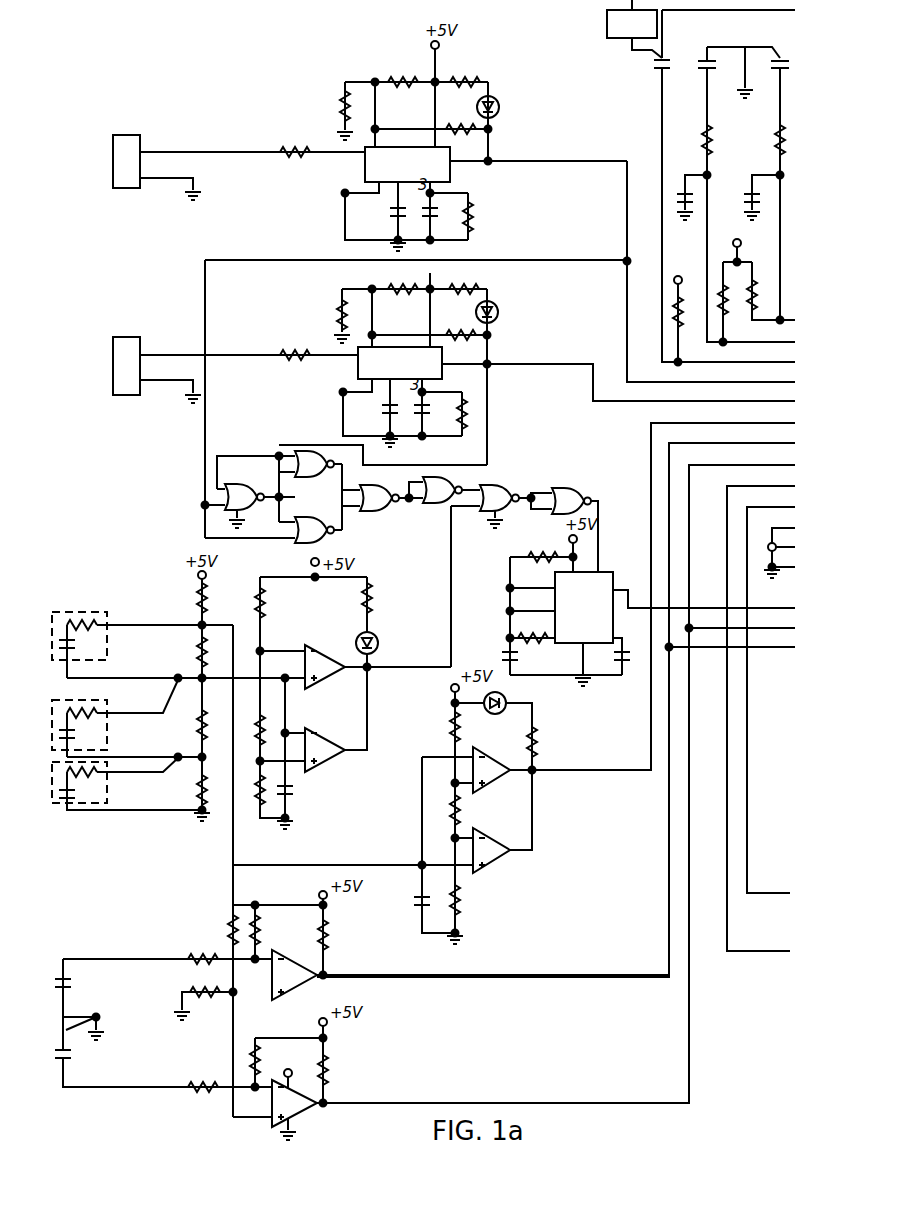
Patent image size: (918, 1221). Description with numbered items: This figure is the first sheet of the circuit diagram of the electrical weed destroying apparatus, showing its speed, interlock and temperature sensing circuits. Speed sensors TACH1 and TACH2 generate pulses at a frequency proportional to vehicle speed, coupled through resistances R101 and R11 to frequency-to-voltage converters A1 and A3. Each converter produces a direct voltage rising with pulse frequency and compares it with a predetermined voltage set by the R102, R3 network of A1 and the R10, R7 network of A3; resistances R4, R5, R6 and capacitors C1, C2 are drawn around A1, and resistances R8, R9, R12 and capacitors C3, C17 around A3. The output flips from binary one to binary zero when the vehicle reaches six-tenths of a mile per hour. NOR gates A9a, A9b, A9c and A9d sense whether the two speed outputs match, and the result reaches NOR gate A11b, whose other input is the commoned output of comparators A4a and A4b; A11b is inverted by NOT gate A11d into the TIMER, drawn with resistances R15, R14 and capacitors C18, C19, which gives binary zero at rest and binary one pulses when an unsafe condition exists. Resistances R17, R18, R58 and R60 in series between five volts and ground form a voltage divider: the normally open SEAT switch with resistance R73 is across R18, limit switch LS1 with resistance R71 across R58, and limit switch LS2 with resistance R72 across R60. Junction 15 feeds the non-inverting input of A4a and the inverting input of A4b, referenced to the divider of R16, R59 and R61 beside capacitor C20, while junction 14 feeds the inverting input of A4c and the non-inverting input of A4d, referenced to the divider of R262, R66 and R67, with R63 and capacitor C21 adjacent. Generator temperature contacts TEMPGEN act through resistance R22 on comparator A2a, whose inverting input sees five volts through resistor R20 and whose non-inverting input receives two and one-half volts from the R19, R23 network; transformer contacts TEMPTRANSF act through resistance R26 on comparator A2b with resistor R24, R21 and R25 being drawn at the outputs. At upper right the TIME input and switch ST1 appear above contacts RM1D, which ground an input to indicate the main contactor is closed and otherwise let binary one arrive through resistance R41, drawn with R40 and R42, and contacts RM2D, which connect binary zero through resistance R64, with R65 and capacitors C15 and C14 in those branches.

The tachometer speed sensor TACH1 is at (210, 167).
The tachometer speed sensor TACH2 is at (206, 370).
The resistance R101 is at (296, 162).
The resistance R102 is at (340, 108).
The resistance R3 is at (410, 64).
The resistor R4 is at (467, 64).
The resistor R5 is at (469, 112).
The resistor R6 is at (472, 214).
The frequency-to-voltage converter A1 is at (496, 163).
The capacitor C1 is at (390, 212).
The capacitor C2 is at (439, 222).
The time input TIME is at (634, 29).
The switch ST1 is at (656, 74).
The main contactor contacts RM1D is at (698, 56).
The output contactor contacts RM2D is at (786, 40).
The resistance R64 is at (772, 132).
The resistor R65 is at (753, 142).
The capacitor C15 is at (676, 194).
The capacitor C14 is at (745, 192).
The resistor R40 is at (686, 342).
The resistance R41 is at (716, 278).
The resistor R42 is at (745, 312).
The resistance R10 is at (338, 316).
The resistance R11 is at (297, 364).
The resistance R7 is at (402, 299).
The resistor R8 is at (470, 280).
The resistor R9 is at (468, 313).
The resistor R12 is at (466, 412).
The frequency-to-voltage converter A3 is at (576, 373).
The capacitor C3 is at (380, 410).
The capacitor C17 is at (430, 416).
The NOR gate A9a is at (254, 468).
The NOR gate A9b is at (312, 440).
The NOR gate A9c is at (312, 508).
The NOR gate A9d is at (376, 512).
The NOR gate A11b is at (498, 484).
The NOT gate A11d is at (440, 504).
The timer TIMER is at (675, 629).
The resistor R15 is at (546, 540).
The resistor R14 is at (532, 650).
The capacitor C18 is at (500, 656).
The capacitor C19 is at (622, 664).
The resistance R17 is at (198, 595).
The resistance R18 is at (198, 651).
The resistance R58 is at (198, 722).
The resistance R60 is at (198, 788).
The junction point 14 is at (214, 614).
The junction point 15 is at (204, 682).
The seat switch SEAT is at (72, 652).
The resistance R73 is at (95, 603).
The coulter limit switch LS1 is at (75, 740).
The resistance R71 is at (90, 705).
The coulter limit switch LS2 is at (70, 810).
The resistance R72 is at (97, 768).
The resistance R16 is at (264, 603).
The resistance R59 is at (264, 720).
The resistance R61 is at (256, 800).
The capacitor C20 is at (290, 794).
The comparator A4a is at (331, 633).
The comparator A4b is at (330, 765).
The comparator A4c is at (496, 740).
The comparator A4d is at (500, 866).
The resistance R262 is at (450, 726).
The resistance R63 is at (536, 742).
The resistance R66 is at (459, 808).
The resistance R67 is at (459, 900).
The capacitor C21 is at (414, 906).
The resistance R19 is at (228, 922).
The resistor R20 is at (259, 928).
The resistor R21 is at (327, 933).
The resistance R22 is at (197, 952).
The resistance R23 is at (200, 1002).
The generator temperature contacts TEMPGEN is at (72, 978).
The transformer temperature contacts TEMPTRANSF is at (70, 1060).
The comparator A2a is at (300, 995).
The comparator A2b is at (306, 1112).
The resistor R24 is at (259, 1058).
The resistor R25 is at (327, 1065).
The resistance R26 is at (204, 1097).